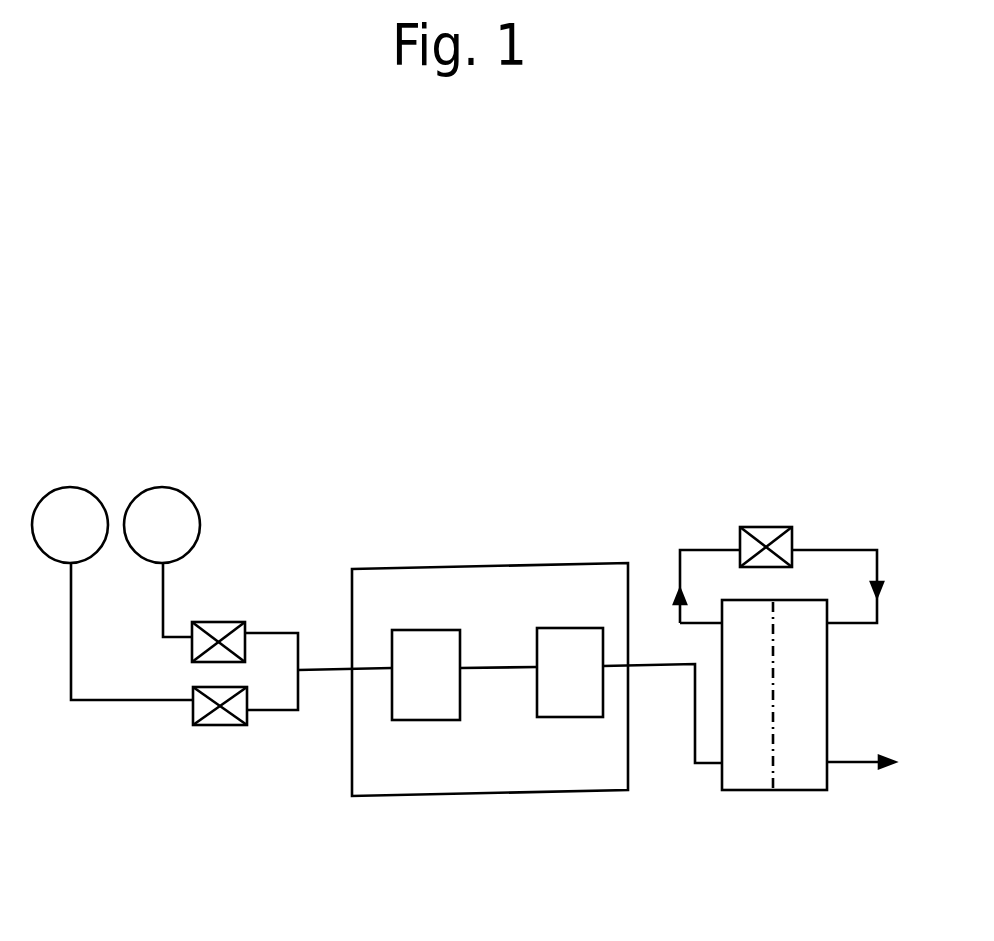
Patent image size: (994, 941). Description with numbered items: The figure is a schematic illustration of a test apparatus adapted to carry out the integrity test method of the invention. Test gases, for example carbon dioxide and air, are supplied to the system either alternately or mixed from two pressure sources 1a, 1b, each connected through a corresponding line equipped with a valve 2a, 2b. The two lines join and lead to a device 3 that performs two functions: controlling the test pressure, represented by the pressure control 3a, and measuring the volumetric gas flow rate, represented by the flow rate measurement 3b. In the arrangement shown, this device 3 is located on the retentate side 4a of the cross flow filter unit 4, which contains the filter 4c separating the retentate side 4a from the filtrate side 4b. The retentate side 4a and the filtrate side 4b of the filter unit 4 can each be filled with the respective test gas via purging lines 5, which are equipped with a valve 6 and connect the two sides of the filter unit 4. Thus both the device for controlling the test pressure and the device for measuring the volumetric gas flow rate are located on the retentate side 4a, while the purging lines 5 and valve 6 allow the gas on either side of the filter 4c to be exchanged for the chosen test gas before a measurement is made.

The pressure source 1a is at (64, 487).
The pressure source 1b is at (160, 487).
The valve 2a is at (219, 725).
The valve 2b is at (213, 622).
The device for controlling pressure and measuring volumetric gas flow rate 3 is at (513, 796).
The pressure control 3a is at (422, 720).
The volumetric gas flow rate measurement 3b is at (571, 628).
The cross flow filter unit 4 is at (798, 738).
The retentate side 4a is at (745, 753).
The filtrate side 4b is at (812, 677).
The filter 4c is at (776, 736).
The purging lines 5 is at (692, 550).
The valve 6 is at (768, 527).